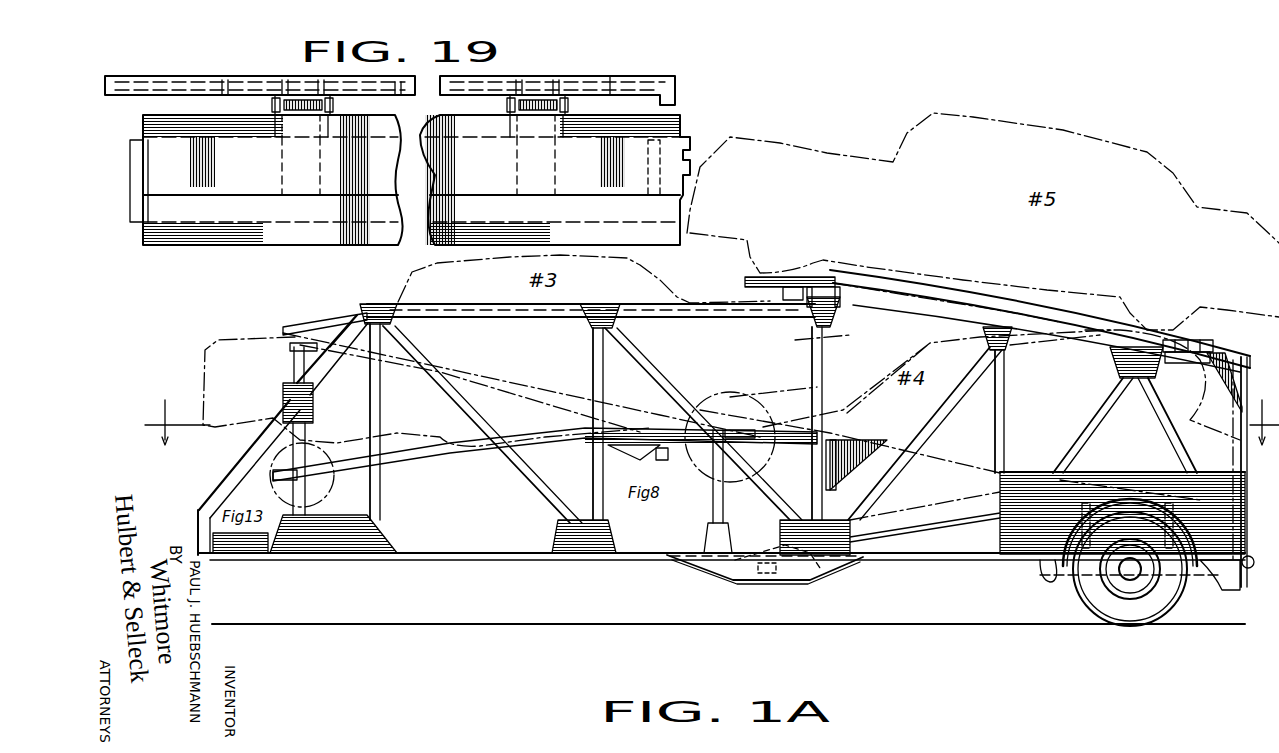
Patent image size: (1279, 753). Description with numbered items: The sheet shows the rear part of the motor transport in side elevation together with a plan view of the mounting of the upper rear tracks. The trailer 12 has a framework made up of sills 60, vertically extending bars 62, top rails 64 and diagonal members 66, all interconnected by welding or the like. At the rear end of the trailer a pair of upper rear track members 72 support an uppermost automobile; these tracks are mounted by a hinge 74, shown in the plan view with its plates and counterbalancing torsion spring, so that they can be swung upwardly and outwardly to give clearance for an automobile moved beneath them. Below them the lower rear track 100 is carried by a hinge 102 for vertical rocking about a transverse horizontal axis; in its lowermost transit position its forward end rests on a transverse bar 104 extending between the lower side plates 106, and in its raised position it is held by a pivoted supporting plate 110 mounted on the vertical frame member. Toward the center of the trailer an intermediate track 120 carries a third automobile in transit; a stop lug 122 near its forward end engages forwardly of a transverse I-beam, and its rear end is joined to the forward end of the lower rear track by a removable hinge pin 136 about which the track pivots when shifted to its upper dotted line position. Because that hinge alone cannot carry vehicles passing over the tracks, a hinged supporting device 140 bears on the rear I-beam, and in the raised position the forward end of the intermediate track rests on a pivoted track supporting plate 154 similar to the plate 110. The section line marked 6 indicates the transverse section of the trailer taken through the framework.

In FIG. 1A, the trailer 12 is at (613, 561).
In FIG. 1A, the sills 60 is at (470, 556).
In FIG. 1A, the vertically extending bars 62 is at (380, 418).
In FIG. 19, the top rails 64 is at (645, 88).
In FIG. 1A, the top rails 64 is at (572, 314).
In FIG. 1A, the diagonal members 66 is at (470, 418).
In FIG. 19, the upper rear track members 72 is at (677, 136).
In FIG. 1A, the upper rear track members 72 is at (950, 292).
In FIG. 19, the hinge 74 is at (322, 105).
In FIG. 1A, the hinge 74 is at (835, 290).
In FIG. 1A, the lower rear track 100 is at (958, 460).
In FIG. 1A, the hinge 102 is at (1120, 490).
In FIG. 1A, the transverse bar 104 is at (787, 580).
In FIG. 1A, the lower side plates 106 is at (718, 565).
In FIG. 1A, the pivoted supporting plate 110 is at (868, 448).
In FIG. 1A, the intermediate track 120 is at (466, 352).
In FIG. 1A, the stop lug 122 is at (274, 480).
In FIG. 1A, the hinge pin 136 is at (742, 430).
In FIG. 1A, the hinged supporting device 140 is at (656, 458).
In FIG. 1A, the pivoted track supporting plate 154 is at (352, 368).
In FIG. 1A, the section line 6- 6 is at (712, 422).